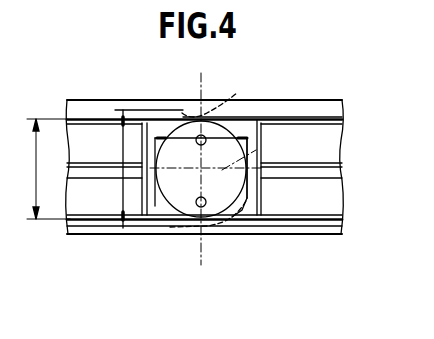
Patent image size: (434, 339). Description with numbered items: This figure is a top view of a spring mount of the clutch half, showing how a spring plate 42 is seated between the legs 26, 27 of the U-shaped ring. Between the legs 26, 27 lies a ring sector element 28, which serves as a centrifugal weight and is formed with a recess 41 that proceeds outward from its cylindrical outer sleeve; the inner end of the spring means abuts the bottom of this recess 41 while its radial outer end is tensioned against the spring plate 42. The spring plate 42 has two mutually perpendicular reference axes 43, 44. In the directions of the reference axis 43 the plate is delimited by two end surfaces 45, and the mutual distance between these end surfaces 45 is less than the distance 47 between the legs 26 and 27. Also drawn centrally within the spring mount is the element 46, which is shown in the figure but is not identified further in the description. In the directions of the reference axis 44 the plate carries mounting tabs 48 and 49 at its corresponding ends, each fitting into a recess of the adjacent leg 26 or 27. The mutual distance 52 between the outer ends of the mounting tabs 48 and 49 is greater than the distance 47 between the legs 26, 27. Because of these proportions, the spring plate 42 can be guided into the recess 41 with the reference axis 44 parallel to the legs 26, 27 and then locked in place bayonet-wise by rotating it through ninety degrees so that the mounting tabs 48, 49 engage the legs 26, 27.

The leg 26 is at (320, 110).
The leg 27 is at (305, 228).
The ring sector element 28 is at (325, 153).
The recess 41 is at (257, 120).
The spring plate 42 is at (228, 200).
The reference axis 43 is at (262, 153).
The reference axis 44 is at (200, 240).
The end surface 45 is at (157, 137).
The ball 46 is at (220, 137).
The distance 47 is at (34, 150).
The mounting tab 48 is at (183, 98).
The mounting tab 49 is at (216, 236).
The distance 52 is at (123, 145).